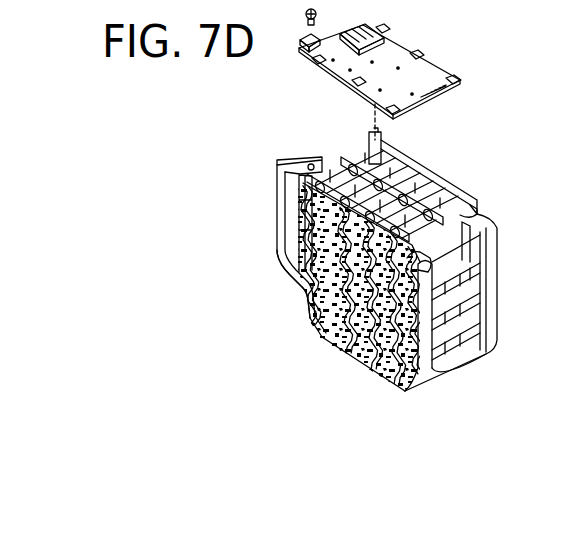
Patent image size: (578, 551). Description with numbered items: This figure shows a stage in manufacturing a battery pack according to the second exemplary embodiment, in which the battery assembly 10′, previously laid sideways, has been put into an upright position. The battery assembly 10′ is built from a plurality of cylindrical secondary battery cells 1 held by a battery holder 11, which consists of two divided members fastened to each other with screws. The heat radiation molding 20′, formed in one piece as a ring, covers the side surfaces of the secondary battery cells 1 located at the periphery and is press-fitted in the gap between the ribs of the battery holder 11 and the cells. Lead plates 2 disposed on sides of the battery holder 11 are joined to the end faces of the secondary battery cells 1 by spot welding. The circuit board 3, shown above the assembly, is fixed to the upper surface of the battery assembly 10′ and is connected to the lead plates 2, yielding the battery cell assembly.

The secondary battery cell 1 is at (490, 290).
The lead plate 2 is at (288, 208).
The circuit board 3 is at (337, 73).
The battery assembly 10′ is at (489, 163).
The battery holder 11 is at (293, 293).
The heat radiation molding 20′ is at (497, 308).